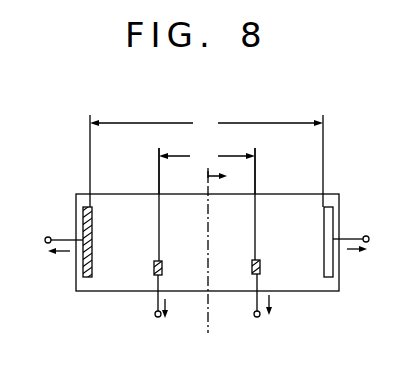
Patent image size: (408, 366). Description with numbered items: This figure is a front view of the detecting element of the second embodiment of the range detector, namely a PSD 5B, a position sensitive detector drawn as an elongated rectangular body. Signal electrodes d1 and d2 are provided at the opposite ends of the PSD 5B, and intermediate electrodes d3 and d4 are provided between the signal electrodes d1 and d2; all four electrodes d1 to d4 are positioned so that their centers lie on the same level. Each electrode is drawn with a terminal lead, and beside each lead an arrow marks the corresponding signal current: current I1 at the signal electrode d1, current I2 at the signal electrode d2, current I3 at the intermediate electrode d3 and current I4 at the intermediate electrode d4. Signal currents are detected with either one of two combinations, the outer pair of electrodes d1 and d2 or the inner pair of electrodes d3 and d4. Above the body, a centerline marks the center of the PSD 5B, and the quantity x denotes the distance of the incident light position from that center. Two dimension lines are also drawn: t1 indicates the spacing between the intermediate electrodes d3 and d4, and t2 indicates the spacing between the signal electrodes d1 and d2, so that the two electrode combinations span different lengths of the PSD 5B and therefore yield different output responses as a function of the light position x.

The PSD 5B is at (314, 278).
The signal electrode d1 is at (353, 227).
The signal electrode d2 is at (60, 229).
The intermediate electrode d3 is at (254, 245).
The intermediate electrode d4 is at (156, 245).
The current through terminal d1 I1 is at (357, 260).
The current through terminal d2 I2 is at (59, 263).
The current through terminal d3 I3 is at (277, 306).
The current through terminal d4 I4 is at (172, 308).
The distance between inner electrodes t1 is at (207, 170).
The distance between outer electrodes t2 is at (206, 160).
The distance of incident light position from the center of the PSD x is at (225, 176).